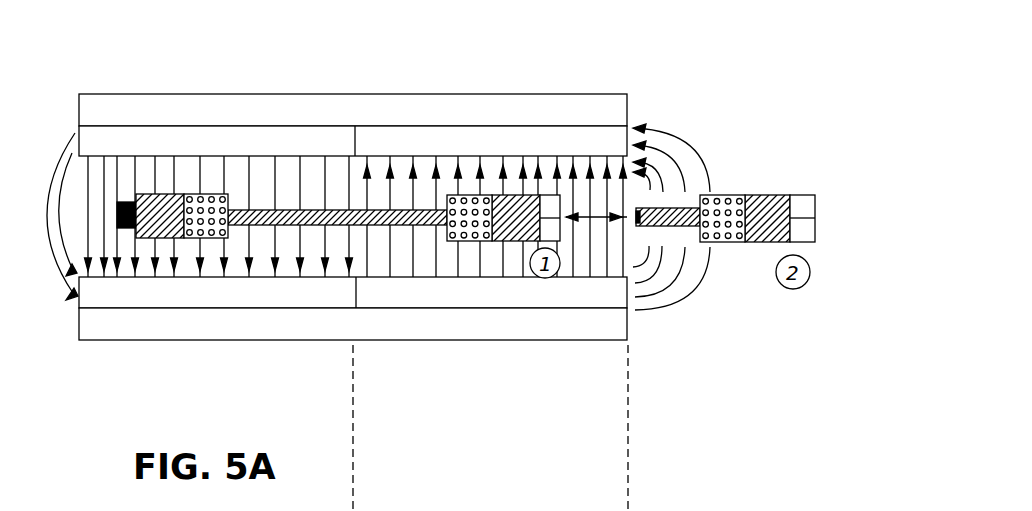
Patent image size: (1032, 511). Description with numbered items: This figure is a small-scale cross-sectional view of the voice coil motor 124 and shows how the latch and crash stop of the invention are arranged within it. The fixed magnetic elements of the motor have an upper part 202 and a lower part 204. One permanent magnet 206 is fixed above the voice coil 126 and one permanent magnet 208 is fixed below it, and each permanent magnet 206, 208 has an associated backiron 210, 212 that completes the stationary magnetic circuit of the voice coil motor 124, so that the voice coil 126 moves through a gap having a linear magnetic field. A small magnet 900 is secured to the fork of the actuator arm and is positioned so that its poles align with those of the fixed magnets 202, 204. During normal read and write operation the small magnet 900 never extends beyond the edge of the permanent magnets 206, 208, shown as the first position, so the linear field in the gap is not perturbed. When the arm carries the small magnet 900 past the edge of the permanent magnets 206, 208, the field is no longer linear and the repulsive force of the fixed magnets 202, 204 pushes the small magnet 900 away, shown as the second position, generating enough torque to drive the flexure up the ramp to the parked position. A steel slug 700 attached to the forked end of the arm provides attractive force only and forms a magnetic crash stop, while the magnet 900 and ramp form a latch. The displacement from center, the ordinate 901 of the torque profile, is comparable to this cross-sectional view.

The upper fixed magnetic element 202 is at (57, 105).
The lower fixed magnetic element 204 is at (70, 322).
The permanent magnet 206 is at (80, 133).
The permanent magnet 208 is at (87, 293).
The backiron 210 is at (317, 112).
The backiron 212 is at (405, 327).
The small magnet 900 is at (547, 195).
The voice coil motor 124 is at (707, 113).
The steel slug 700 is at (125, 228).
The voice coil 126 is at (207, 238).
The ordinate 901 is at (628, 485).